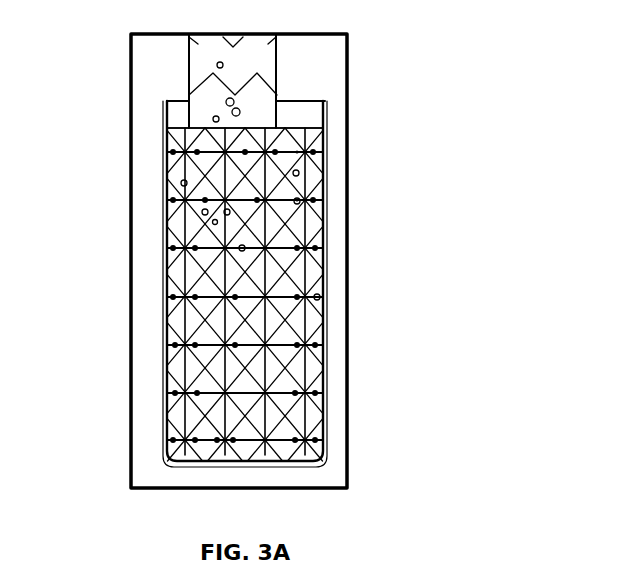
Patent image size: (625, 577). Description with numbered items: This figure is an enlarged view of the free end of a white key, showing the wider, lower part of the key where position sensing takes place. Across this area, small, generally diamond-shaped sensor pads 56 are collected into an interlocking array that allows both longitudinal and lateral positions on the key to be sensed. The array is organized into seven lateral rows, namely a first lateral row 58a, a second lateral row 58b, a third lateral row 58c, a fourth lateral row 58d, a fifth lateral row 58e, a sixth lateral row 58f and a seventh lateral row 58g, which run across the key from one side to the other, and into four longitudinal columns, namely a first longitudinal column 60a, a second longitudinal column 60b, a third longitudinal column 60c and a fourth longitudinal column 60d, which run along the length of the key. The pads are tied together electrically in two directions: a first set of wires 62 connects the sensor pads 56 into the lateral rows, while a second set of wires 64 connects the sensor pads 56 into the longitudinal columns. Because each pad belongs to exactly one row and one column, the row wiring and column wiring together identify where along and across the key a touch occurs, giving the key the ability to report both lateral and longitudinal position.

The sensor pad 56 is at (325, 163).
The first lateral row 58a is at (166, 146).
The second lateral row 58b is at (166, 193).
The third lateral row 58c is at (166, 241).
The fourth lateral row 58d is at (166, 290).
The fifth lateral row 58e is at (166, 338).
The sixth lateral row 58f is at (166, 386).
The seventh lateral row 58g is at (167, 432).
The first longitudinal column 60a is at (183, 128).
The second longitudinal column 60b is at (228, 128).
The third longitudinal column 60c is at (263, 128).
The fourth longitudinal column 60d is at (297, 128).
The first set of wires 62 is at (297, 154).
The second set of wires 64 is at (371, 453).